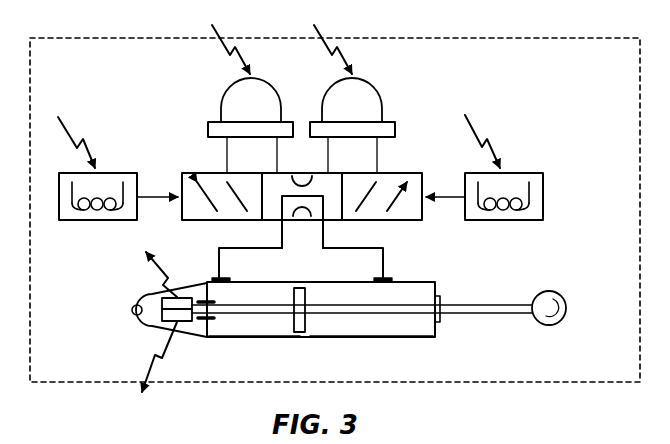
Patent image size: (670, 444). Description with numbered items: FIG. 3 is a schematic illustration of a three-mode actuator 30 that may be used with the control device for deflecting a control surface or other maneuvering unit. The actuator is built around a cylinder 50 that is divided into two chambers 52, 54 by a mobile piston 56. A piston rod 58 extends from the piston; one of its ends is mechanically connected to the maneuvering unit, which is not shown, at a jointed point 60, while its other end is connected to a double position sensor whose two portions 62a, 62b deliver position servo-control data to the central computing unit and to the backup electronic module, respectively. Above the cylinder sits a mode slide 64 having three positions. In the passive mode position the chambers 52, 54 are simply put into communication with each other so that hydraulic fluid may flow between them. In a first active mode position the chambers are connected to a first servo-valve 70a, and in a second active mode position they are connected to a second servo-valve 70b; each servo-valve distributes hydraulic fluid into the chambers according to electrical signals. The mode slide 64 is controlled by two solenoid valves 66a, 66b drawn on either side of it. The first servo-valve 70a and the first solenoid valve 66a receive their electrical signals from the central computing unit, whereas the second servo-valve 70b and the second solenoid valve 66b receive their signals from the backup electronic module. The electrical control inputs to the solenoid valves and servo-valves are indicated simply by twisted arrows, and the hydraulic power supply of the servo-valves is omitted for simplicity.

The optical measurement system 30 is at (78, 36).
The cylinder 50 is at (408, 282).
The chamber 52 is at (230, 330).
The chamber 54 is at (405, 328).
The mobile piston 56 is at (300, 333).
The piston rod 58 is at (518, 303).
The jointed point 60 is at (552, 291).
The position sensor portion 62a is at (160, 298).
The position sensor portion 62b is at (160, 321).
The mode slide 64 is at (406, 168).
The first solenoid valve 66a is at (100, 220).
The second solenoid valve 66b is at (505, 220).
The first servo-valve 70a is at (375, 95).
The second servo-valve 70b is at (230, 95).